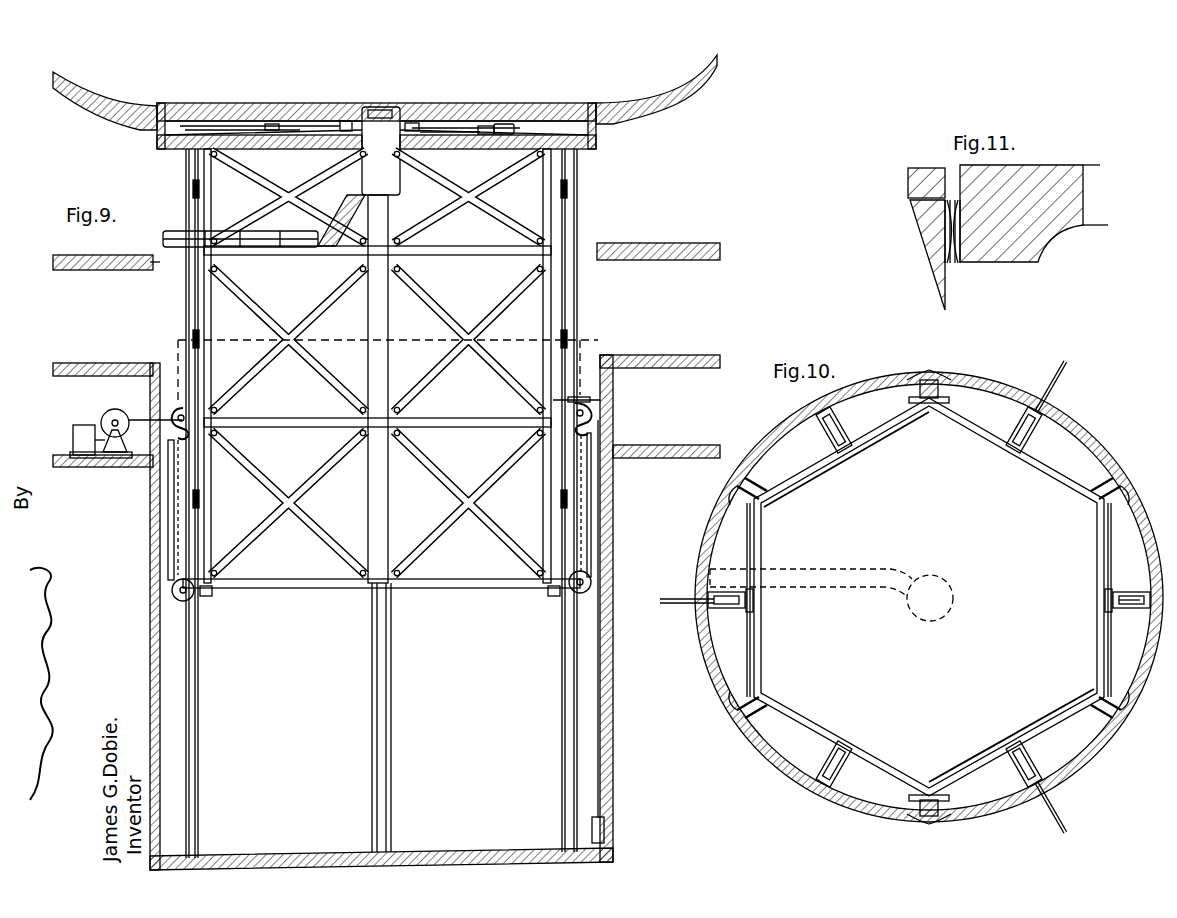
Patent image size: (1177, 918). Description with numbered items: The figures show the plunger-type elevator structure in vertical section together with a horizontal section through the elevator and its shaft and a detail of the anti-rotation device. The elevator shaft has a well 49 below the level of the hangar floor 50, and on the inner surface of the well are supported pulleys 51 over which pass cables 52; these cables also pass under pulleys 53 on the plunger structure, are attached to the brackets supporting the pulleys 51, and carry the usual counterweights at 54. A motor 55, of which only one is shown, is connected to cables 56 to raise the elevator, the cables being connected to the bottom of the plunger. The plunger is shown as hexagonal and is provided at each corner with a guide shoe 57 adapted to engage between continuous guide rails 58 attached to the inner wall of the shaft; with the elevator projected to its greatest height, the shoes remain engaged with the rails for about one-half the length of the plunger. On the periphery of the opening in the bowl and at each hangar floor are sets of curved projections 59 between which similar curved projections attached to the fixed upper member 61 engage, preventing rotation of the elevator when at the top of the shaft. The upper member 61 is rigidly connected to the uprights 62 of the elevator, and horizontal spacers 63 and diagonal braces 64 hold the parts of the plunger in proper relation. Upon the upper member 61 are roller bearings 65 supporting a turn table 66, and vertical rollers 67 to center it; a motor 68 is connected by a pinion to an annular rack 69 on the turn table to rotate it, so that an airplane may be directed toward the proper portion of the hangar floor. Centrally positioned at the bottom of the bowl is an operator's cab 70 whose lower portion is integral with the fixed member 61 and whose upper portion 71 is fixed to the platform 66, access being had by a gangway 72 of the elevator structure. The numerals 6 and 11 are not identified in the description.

In FIG. 11, the joint caulking 6 is at (950, 270).
In FIG. 9, the cable 11 is at (372, 402).
In FIG. 9, the well 49 is at (610, 574).
In FIG. 10, the well 49 is at (1085, 442).
In FIG. 9, the hangar floor 50 is at (690, 355).
In FIG. 9, the pulleys 51 is at (600, 400).
In FIG. 9, the cables 52 is at (595, 505).
In FIG. 10, the cables 52 is at (1108, 592).
In FIG. 9, the pulleys 53 is at (594, 586).
In FIG. 9, the counterweights 54 is at (604, 828).
In FIG. 9, the motors 55 is at (70, 446).
In FIG. 9, the cables 56 is at (170, 516).
In FIG. 10, the cables 56 is at (700, 606).
In FIG. 10, the guide shoe 57 is at (930, 385).
In FIG. 10, the guide rails 58 is at (1125, 492).
In FIG. 11, the curved projections 59 is at (966, 268).
In FIG. 9, the upper member 61 is at (590, 150).
In FIG. 9, the uprights 62 is at (186, 313).
In FIG. 9, the horizontal spacers 63 is at (458, 427).
In FIG. 9, the diagonal braces 64 is at (450, 493).
In FIG. 9, the roller bearings 65 is at (418, 123).
In FIG. 9, the turn table 66 is at (555, 110).
In FIG. 11, the turn table 66 is at (920, 175).
In FIG. 9, the vertical rollers 67 is at (344, 121).
In FIG. 9, the motor 68 is at (504, 124).
In FIG. 9, the annular rack 69 is at (272, 124).
In FIG. 9, the operator's cab 70 is at (399, 384).
In FIG. 10, the operator's cab 70 is at (946, 618).
In FIG. 9, the upper portion 71 is at (382, 108).
In FIG. 9, the gangway 72 is at (296, 256).
In FIG. 10, the gangway 72 is at (833, 575).